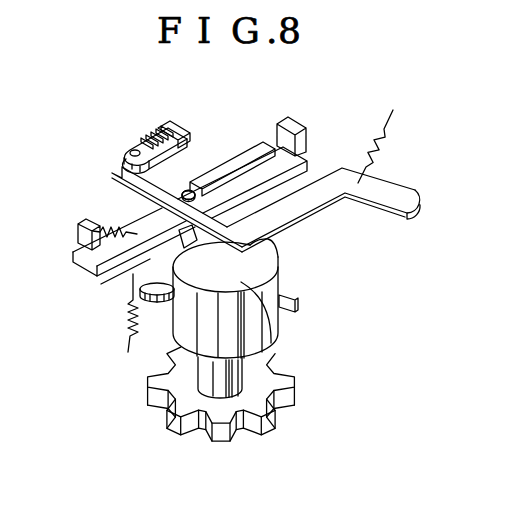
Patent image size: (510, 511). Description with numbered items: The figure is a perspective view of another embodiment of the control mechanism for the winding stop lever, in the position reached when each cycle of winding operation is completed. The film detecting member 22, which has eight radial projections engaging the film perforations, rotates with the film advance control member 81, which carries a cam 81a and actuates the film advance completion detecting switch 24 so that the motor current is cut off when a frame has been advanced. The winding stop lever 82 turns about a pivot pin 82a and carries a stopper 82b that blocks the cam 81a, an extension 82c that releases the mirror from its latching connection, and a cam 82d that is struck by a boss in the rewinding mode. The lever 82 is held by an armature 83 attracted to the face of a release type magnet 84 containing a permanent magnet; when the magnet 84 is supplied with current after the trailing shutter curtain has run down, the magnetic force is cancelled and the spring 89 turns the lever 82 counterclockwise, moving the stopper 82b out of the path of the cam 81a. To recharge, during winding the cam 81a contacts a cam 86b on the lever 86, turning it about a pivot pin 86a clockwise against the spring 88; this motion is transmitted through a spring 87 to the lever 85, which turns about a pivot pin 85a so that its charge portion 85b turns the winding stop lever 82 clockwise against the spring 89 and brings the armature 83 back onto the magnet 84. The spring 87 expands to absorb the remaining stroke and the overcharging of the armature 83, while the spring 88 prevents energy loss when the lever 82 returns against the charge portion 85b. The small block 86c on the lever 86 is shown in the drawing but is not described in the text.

The film detecting member 22 is at (202, 424).
The film advance completion detecting switch 24 is at (298, 305).
The film advance control member 81 is at (263, 330).
The cam 81a is at (282, 246).
The winding stop lever 82 is at (318, 185).
The pivot pin 82a is at (188, 185).
The stopper 82b is at (282, 266).
The extension 82c is at (233, 167).
The cam 82d is at (408, 197).
The armature 83 is at (128, 148).
The release type magnet 84 is at (165, 127).
The lever 85 is at (87, 266).
The pivot pin 85a is at (188, 195).
The charge portion 85b is at (298, 118).
The lever 86 is at (117, 280).
The pivot pin 86a is at (188, 195).
The cam 86b is at (153, 304).
The block 86c is at (78, 242).
The spring 87 is at (120, 227).
The spring 88 is at (122, 320).
The spring 89 is at (382, 157).